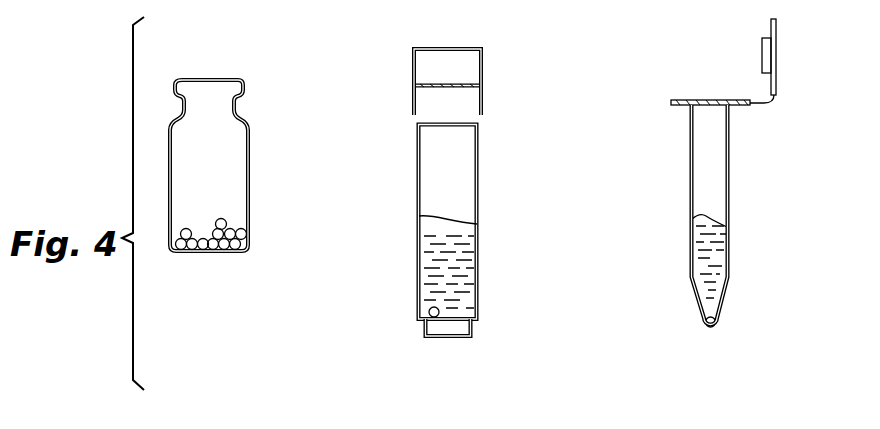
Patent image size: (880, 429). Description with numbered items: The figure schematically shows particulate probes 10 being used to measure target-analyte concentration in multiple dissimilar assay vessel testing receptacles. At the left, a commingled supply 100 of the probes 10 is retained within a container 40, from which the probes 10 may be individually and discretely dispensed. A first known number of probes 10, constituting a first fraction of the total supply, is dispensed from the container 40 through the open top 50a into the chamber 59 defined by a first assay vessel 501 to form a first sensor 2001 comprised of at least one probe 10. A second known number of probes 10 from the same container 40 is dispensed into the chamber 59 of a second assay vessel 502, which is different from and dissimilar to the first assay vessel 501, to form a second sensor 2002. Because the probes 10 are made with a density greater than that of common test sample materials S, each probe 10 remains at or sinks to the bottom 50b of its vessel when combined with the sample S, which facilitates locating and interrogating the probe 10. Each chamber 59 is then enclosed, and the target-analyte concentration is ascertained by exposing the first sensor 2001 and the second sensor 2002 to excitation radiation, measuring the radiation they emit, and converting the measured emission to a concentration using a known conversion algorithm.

The particulate probe 10 is at (246, 232).
The container 40 is at (250, 134).
The commingled supply of probes 100 is at (215, 256).
The open top 50a is at (445, 116).
The bottom 50b is at (448, 322).
The chamber 59 is at (445, 199).
The first assay vessel 501 is at (479, 170).
The second assay vessel 502 is at (730, 170).
The first sensor 2001 is at (441, 312).
The second sensor 2002 is at (721, 322).
The test sample materials S is at (430, 279).